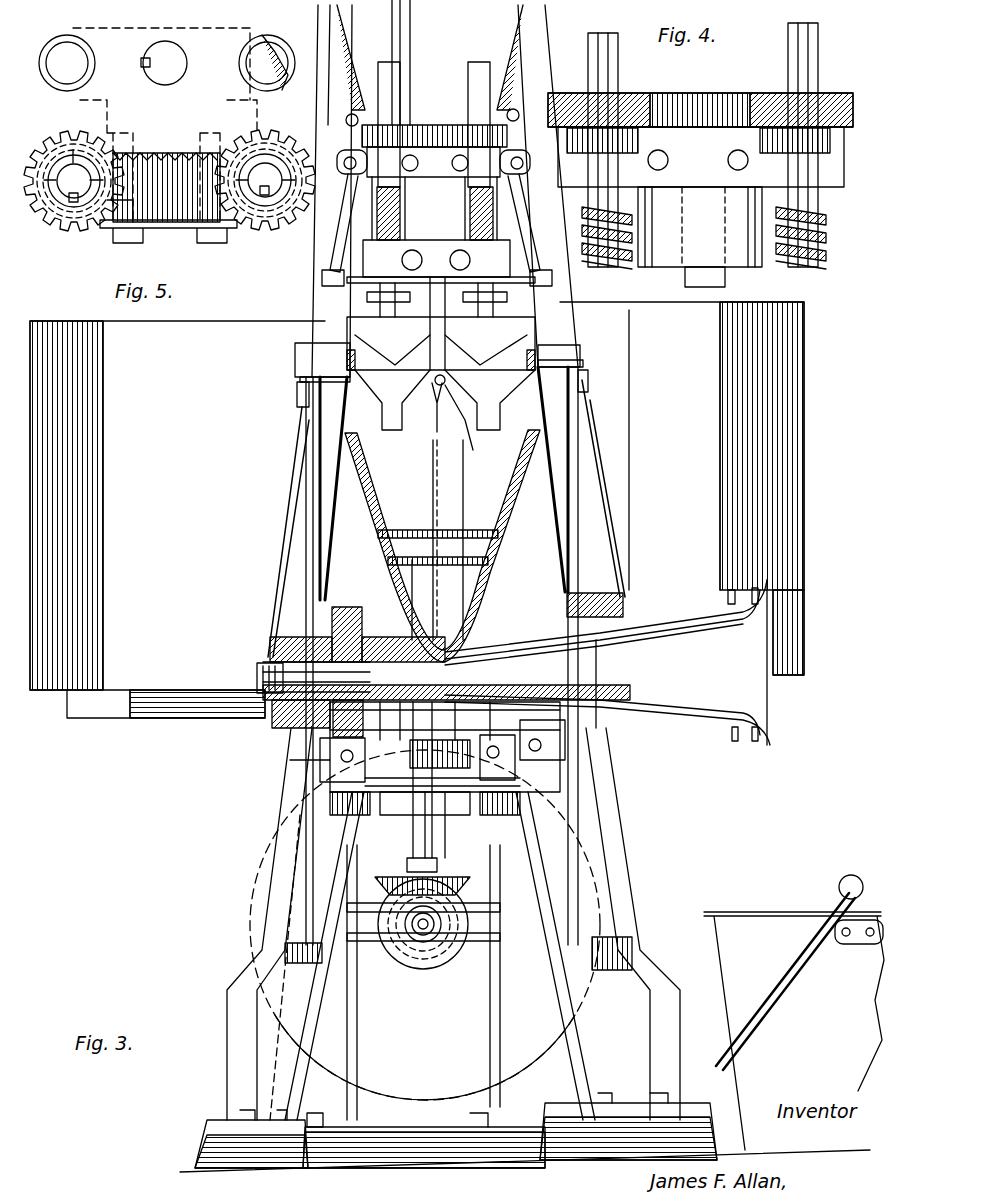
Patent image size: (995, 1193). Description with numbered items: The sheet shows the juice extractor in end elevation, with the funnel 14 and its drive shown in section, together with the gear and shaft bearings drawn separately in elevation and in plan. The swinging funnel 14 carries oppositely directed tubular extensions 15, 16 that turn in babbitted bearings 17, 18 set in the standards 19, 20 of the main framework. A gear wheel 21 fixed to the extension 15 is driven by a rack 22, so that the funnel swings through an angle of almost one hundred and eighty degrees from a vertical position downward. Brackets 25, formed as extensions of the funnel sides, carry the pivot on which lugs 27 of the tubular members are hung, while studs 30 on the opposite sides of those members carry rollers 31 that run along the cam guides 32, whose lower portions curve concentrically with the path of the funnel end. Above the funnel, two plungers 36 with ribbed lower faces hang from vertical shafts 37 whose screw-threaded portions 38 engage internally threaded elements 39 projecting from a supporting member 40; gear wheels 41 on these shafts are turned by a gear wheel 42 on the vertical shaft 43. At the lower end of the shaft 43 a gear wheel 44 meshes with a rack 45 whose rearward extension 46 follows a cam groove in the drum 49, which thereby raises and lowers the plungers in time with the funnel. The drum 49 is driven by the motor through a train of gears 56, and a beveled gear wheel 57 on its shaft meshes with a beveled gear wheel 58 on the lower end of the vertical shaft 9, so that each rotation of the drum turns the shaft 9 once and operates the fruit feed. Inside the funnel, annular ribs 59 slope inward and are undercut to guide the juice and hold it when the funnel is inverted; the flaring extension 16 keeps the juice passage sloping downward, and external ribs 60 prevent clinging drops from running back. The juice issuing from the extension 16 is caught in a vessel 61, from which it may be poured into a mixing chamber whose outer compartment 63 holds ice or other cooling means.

In FIG. 3, the vertical shaft 9 is at (402, 37).
In FIG. 3, the swinging funnel 14 is at (500, 530).
In FIG. 3, the tubular extension 15 is at (258, 672).
In FIG. 3, the tubular extension 16 is at (630, 630).
In FIG. 3, the babbitted bearing 17 is at (275, 640).
In FIG. 3, the babbitted bearing 18 is at (598, 605).
In FIG. 3, the standard 19 is at (290, 760).
In FIG. 3, the standard 20 is at (607, 768).
In FIG. 3, the gear wheel 21 is at (347, 607).
In FIG. 3, the rack 22 is at (345, 757).
In FIG. 3, the brackets 25 is at (468, 430).
In FIG. 3, the lugs 27 is at (438, 430).
In FIG. 3, the studs 30 is at (305, 355).
In FIG. 3, the rollers 31 is at (298, 360).
In FIG. 3, the cam guides 32 is at (300, 392).
In FIG. 3, the plungers 36 is at (347, 325).
In FIG. 5, the vertical shafts 37 is at (67, 200).
In FIG. 4, the vertical shafts 37 is at (590, 48).
In FIG. 3, the vertical shafts 37 is at (478, 65).
In FIG. 4, the screw-threaded portions 38 is at (585, 225).
In FIG. 3, the screw-threaded portions 38 is at (470, 215).
In FIG. 5, the internally threaded elements 39 is at (178, 213).
In FIG. 3, the internally threaded elements 39 is at (435, 252).
In FIG. 5, the supporting member 40 is at (290, 80).
In FIG. 4, the supporting member 40 is at (700, 227).
In FIG. 3, the supporting member 40 is at (434, 208).
In FIG. 5, the gear wheels 41 is at (73, 228).
In FIG. 4, the gear wheels 41 is at (640, 95).
In FIG. 3, the gear wheels 41 is at (355, 150).
In FIG. 4, the gear wheel 42 is at (697, 93).
In FIG. 3, the gear wheel 42 is at (440, 125).
In FIG. 5, the vertical shaft 43 is at (172, 68).
In FIG. 4, the vertical shaft 43 is at (725, 278).
In FIG. 3, the vertical shaft 43 is at (433, 700).
In FIG. 3, the gear wheel 44 is at (455, 710).
In FIG. 3, the rack 45 is at (522, 748).
In FIG. 3, the rearward extension 46 is at (535, 795).
In FIG. 3, the drum 49 is at (475, 1080).
In FIG. 3, the train of gears 56 is at (340, 1105).
In FIG. 3, the beveled gear wheel 57 is at (423, 970).
In FIG. 3, the beveled gear wheel 58 is at (448, 875).
In FIG. 3, the annular ribs 59 is at (425, 560).
In FIG. 3, the external ribs 60 is at (753, 742).
In FIG. 3, the vessel 61 is at (780, 915).
In FIG. 3, the outer compartment 63 is at (417, 496).